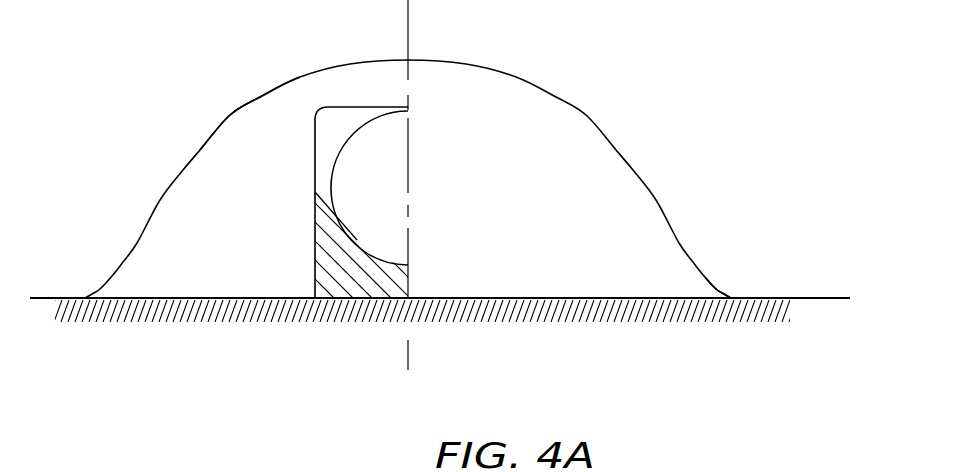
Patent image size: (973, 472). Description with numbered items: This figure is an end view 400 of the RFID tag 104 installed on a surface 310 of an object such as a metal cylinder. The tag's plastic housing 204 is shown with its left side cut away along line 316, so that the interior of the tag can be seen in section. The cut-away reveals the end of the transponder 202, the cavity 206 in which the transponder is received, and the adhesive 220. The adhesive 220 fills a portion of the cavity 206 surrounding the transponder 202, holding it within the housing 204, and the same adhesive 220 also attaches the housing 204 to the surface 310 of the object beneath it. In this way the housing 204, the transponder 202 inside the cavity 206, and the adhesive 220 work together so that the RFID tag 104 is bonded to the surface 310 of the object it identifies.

The RFID tag 104 is at (642, 182).
The transponder 202 is at (390, 163).
The plastic housing 204 is at (275, 108).
The cavity 206 is at (343, 128).
The adhesive 220 is at (733, 297).
The surface 310 is at (766, 310).
The cut-away line 316 is at (410, 240).
The end view 400 is at (863, 70).